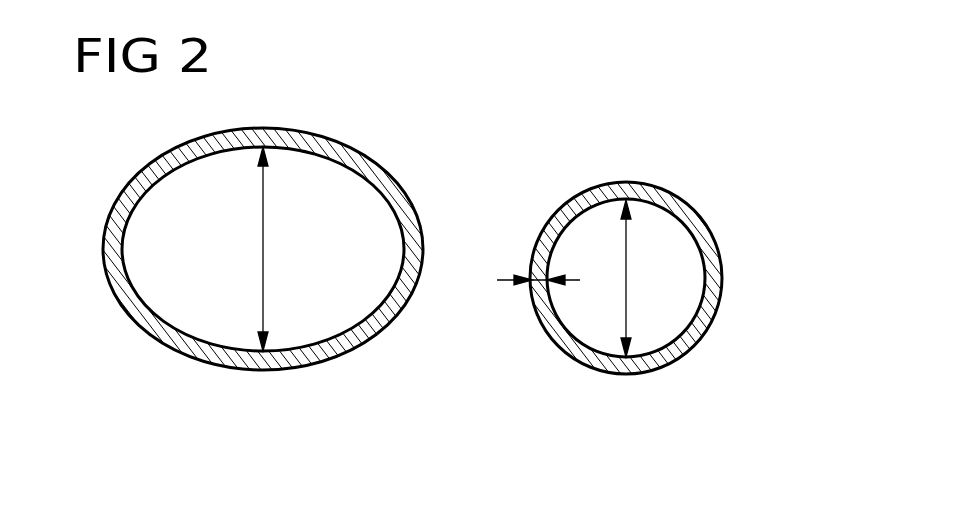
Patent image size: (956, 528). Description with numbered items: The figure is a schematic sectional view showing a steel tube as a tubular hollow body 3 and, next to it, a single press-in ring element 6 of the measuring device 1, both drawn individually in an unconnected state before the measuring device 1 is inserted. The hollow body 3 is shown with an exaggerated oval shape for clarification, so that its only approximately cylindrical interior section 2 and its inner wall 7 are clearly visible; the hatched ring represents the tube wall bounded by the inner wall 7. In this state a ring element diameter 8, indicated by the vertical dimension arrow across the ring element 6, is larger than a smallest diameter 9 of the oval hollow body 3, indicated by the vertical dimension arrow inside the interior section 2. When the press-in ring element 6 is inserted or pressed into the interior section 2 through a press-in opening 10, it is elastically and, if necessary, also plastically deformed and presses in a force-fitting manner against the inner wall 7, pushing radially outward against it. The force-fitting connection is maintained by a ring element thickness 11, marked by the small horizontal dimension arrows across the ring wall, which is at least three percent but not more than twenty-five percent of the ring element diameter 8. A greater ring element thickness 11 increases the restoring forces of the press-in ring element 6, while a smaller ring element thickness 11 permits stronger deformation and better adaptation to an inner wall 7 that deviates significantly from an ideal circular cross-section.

The measuring device 1 is at (740, 334).
The interior section 2 is at (146, 243).
The tubular hollow body 3 is at (381, 178).
The press-in ring element 6 is at (707, 228).
The inner wall 7 is at (200, 336).
The ring element diameter 8 is at (627, 287).
The smallest diameter 9 is at (265, 248).
The press-in opening 10 is at (200, 174).
The ring element thickness 11 is at (532, 266).